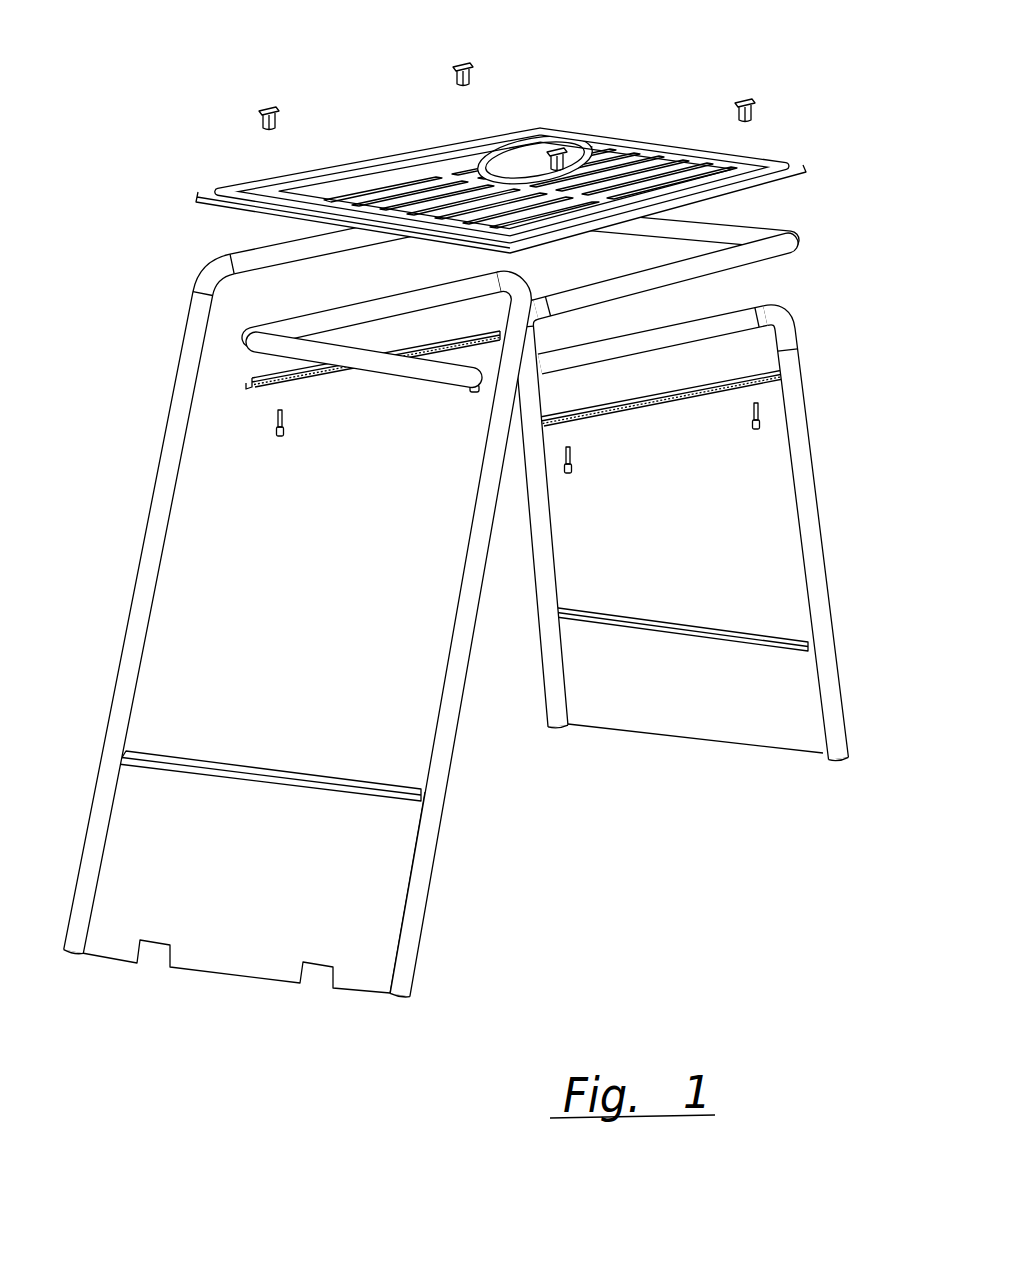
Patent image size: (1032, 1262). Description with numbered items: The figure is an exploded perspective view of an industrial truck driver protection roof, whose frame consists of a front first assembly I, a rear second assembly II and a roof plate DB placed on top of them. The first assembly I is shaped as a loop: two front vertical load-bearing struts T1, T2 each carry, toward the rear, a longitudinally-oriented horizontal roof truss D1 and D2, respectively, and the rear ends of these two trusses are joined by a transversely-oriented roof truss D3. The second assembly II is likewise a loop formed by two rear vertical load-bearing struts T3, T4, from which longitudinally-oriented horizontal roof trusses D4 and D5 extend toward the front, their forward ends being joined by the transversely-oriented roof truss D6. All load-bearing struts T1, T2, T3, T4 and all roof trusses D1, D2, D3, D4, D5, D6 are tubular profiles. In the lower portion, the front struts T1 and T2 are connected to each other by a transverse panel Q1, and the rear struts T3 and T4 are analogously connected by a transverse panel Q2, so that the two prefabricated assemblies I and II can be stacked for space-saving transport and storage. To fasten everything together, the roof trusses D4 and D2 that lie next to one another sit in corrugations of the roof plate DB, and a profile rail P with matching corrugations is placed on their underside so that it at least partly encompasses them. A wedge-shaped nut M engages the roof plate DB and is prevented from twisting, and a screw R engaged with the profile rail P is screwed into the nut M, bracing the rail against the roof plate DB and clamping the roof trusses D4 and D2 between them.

The roof plate DB is at (478, 135).
The wedge-shaped nut M is at (760, 112).
The roof truss D1 is at (287, 248).
The roof truss D2 is at (657, 278).
The roof truss D3 is at (670, 228).
The roof truss D4 is at (640, 342).
The roof truss D5 is at (377, 308).
The roof truss D6 is at (280, 386).
The load-bearing strut T1 is at (136, 604).
The load-bearing strut T2 is at (473, 587).
The load-bearing strut T3 is at (586, 519).
The load-bearing strut T4 is at (803, 478).
The profile rail P is at (693, 393).
The screw R is at (750, 417).
The transverse panel Q1 is at (253, 878).
The transverse panel Q2 is at (703, 690).
The first assembly I is at (290, 601).
The second assembly II is at (711, 460).